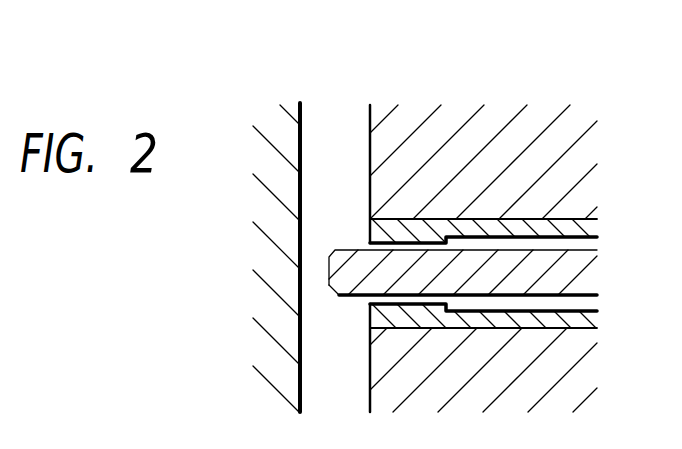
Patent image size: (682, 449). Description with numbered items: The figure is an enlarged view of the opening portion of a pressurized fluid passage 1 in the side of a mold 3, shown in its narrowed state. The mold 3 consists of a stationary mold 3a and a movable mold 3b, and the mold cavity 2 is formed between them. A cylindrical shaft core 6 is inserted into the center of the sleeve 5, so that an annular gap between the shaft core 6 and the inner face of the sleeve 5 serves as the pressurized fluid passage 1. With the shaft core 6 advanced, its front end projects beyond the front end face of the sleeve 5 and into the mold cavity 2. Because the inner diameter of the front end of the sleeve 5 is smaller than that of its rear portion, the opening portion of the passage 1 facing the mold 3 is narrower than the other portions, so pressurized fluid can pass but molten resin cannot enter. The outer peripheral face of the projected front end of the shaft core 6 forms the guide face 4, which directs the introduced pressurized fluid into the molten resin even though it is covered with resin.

The pressurized fluid passage 1 is at (587, 305).
The mold cavity 2 is at (317, 192).
The mold 3 is at (278, 62).
The stationary mold 3a is at (278, 133).
The movable mold 3b is at (395, 132).
The guide face 4 is at (350, 284).
The sleeve 5 is at (552, 328).
The shaft core 6 is at (580, 273).